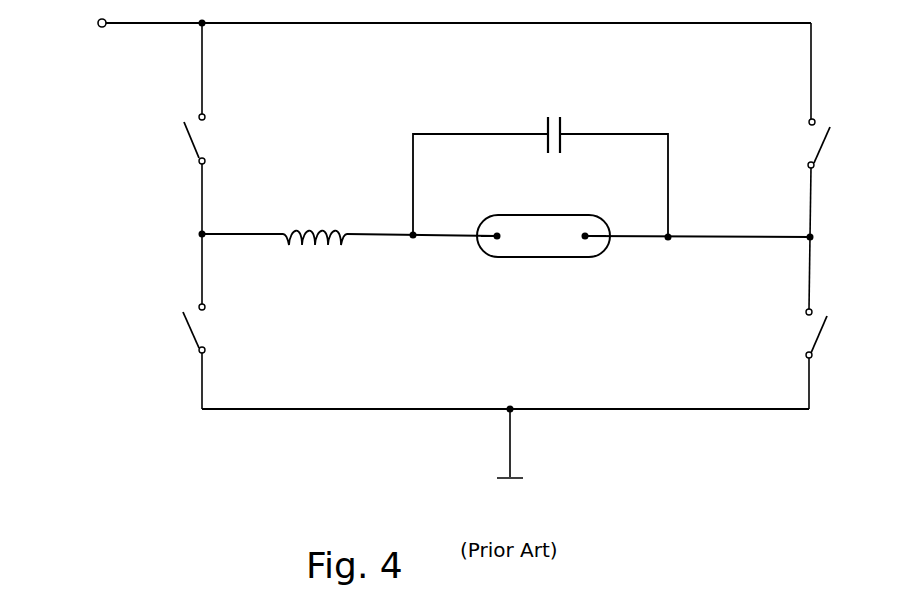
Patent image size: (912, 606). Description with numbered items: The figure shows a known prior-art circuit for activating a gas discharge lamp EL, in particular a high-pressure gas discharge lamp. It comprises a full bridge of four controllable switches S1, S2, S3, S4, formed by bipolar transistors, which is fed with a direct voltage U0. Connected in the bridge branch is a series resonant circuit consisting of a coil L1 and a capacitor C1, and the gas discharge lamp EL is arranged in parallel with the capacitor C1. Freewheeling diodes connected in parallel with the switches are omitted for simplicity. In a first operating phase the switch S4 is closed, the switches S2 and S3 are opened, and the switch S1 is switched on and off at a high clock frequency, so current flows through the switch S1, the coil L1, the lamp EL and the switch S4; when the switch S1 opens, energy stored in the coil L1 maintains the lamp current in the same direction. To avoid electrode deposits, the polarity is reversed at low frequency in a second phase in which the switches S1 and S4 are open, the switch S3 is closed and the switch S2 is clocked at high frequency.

The direct voltage U0 is at (98, 23).
The switch S1 is at (189, 140).
The switch S2 is at (187, 330).
The switch S3 is at (819, 148).
The switch S4 is at (819, 336).
The coil L1 is at (320, 246).
The capacitor C1 is at (553, 116).
The gas discharge lamp EL is at (541, 258).